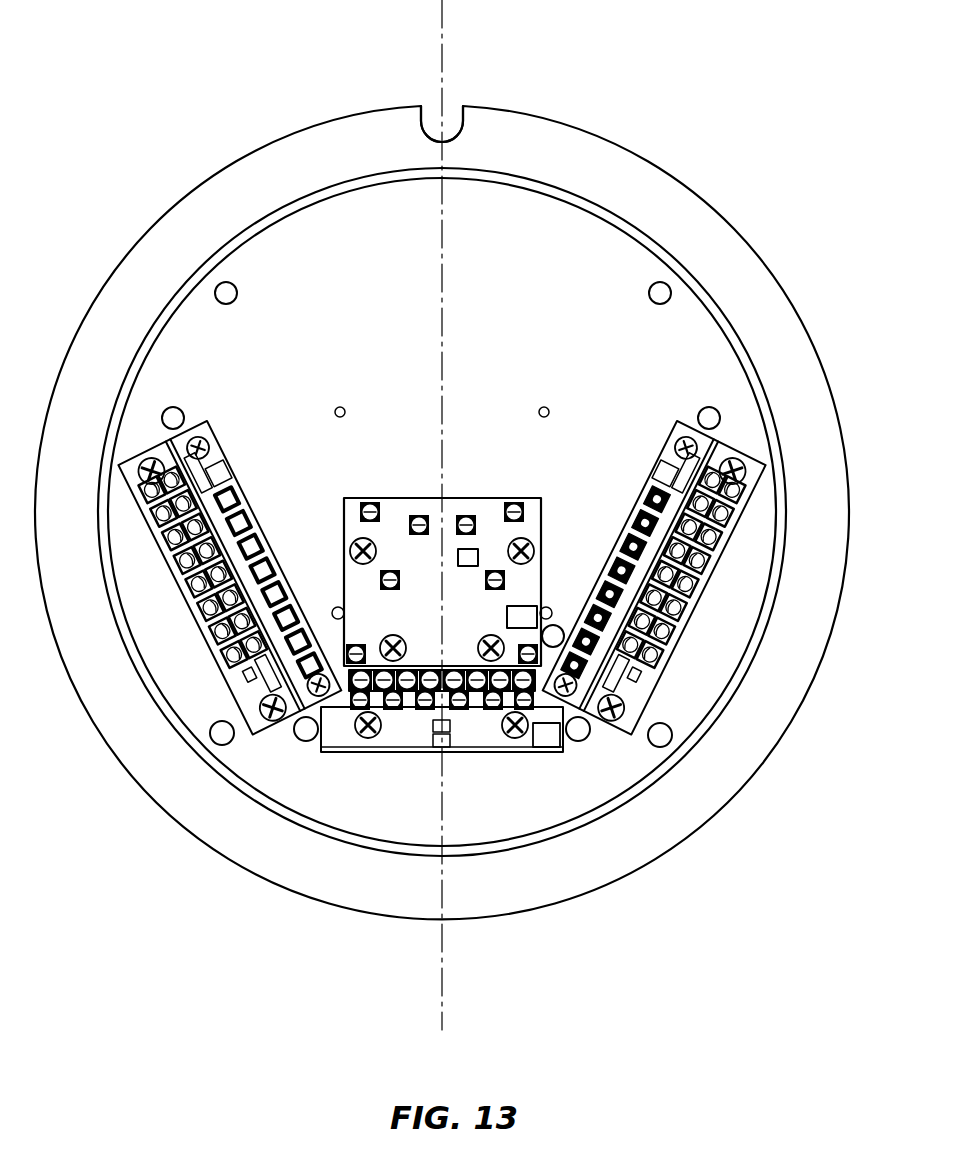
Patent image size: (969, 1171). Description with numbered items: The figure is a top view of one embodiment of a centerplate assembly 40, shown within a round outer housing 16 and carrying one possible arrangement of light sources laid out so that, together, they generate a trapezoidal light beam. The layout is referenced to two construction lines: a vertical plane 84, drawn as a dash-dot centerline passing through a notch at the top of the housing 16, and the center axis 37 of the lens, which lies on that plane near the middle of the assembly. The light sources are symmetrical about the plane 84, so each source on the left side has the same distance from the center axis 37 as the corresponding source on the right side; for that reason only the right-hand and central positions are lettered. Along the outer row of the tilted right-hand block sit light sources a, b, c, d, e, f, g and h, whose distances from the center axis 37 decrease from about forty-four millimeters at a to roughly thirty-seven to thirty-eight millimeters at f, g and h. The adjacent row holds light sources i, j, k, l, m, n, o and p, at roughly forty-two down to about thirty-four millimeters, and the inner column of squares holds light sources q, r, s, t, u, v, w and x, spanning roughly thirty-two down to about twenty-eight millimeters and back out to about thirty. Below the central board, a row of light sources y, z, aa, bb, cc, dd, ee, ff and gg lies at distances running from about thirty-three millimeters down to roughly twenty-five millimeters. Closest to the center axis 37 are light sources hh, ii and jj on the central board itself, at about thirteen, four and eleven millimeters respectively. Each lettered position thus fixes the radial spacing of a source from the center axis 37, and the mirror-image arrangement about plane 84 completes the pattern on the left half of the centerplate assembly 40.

The housing 16 is at (766, 205).
The centerplate assembly 40 is at (703, 826).
The plane 84 is at (441, 62).
The center axis 37 is at (443, 511).
The light source 72a a is at (740, 487).
The light source 72b b is at (728, 511).
The light source 72c c is at (718, 539).
The light source 72d d is at (706, 563).
The light source 72e e is at (694, 587).
The light source 72f f is at (682, 611).
The light source 72g g is at (670, 636).
The light source 72h h is at (658, 660).
The light source 72i i is at (716, 470).
The light source 72j j is at (710, 506).
The light source 72k k is at (698, 532).
The light source 72l l is at (686, 556).
The light source 72m m is at (674, 580).
The light source 72n n is at (662, 604).
The light source 72o o is at (650, 627).
The light source 72p p is at (638, 653).
The light source 72q q is at (655, 489).
The light source 72r r is at (642, 514).
The light source 72s s is at (628, 540).
The light source 72t t is at (616, 563).
The light source 72u u is at (604, 586).
The light source 72v v is at (592, 610).
The light source 72w w is at (581, 634).
The light source 72x x is at (569, 657).
The light source 72y y is at (556, 739).
The light source 72z z is at (524, 692).
The light source 72aa aa is at (502, 740).
The light source 72bb bb is at (459, 712).
The light source 72cc cc is at (494, 712).
The light source 72dd dd is at (497, 692).
The light source 72ee ee is at (478, 670).
The light source 72ff ff is at (456, 670).
The light source 72gg gg is at (520, 652).
The light source 72hh hh is at (487, 578).
The light source 72ii ii is at (468, 513).
The light source 72jj jj is at (516, 503).